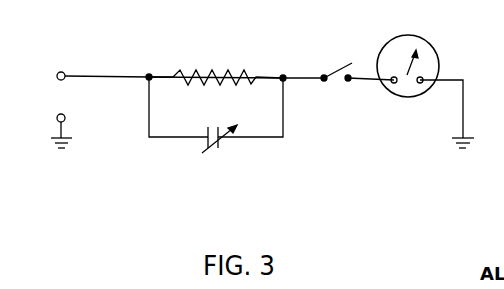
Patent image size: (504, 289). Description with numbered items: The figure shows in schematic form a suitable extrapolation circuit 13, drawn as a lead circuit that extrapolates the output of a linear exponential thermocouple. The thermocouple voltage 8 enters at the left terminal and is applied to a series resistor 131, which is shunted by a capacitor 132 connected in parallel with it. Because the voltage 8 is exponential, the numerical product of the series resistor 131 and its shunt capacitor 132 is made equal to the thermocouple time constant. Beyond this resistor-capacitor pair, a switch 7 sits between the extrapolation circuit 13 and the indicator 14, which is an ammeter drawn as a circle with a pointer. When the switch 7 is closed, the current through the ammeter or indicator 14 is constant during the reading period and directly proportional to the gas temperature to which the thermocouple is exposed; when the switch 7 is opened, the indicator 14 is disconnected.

The voltage 8 is at (109, 75).
The extrapolation circuit 13 is at (356, 161).
The series resistor 131 is at (213, 73).
The shunt capacitor 132 is at (220, 147).
The switch 7 is at (337, 67).
The indicator 14 is at (430, 44).